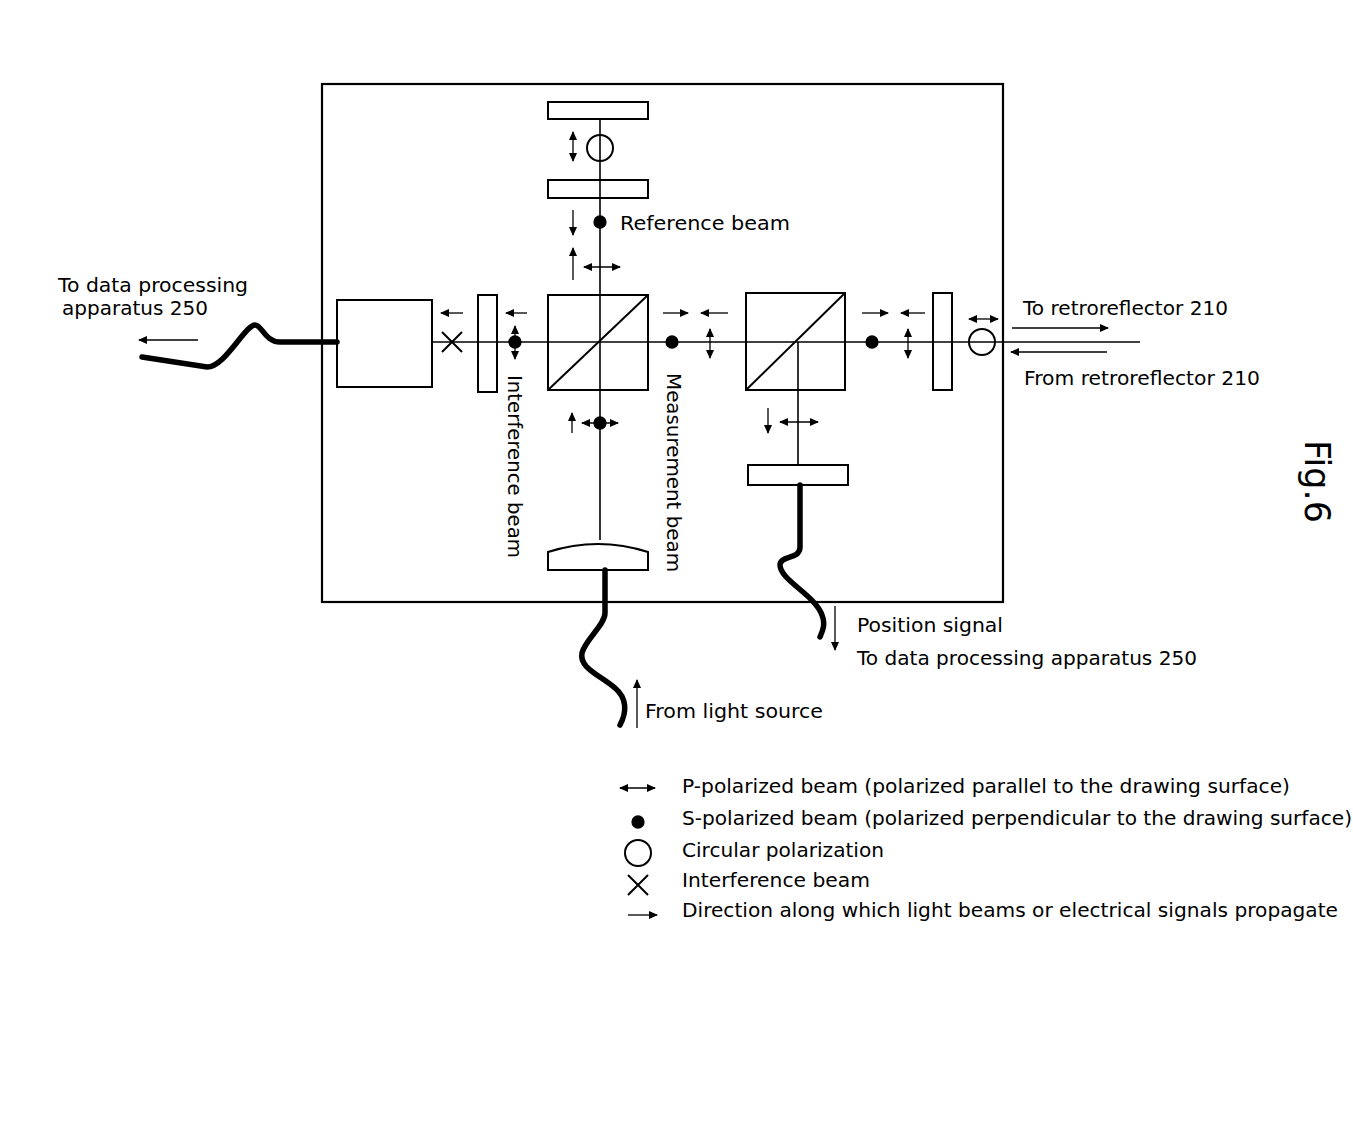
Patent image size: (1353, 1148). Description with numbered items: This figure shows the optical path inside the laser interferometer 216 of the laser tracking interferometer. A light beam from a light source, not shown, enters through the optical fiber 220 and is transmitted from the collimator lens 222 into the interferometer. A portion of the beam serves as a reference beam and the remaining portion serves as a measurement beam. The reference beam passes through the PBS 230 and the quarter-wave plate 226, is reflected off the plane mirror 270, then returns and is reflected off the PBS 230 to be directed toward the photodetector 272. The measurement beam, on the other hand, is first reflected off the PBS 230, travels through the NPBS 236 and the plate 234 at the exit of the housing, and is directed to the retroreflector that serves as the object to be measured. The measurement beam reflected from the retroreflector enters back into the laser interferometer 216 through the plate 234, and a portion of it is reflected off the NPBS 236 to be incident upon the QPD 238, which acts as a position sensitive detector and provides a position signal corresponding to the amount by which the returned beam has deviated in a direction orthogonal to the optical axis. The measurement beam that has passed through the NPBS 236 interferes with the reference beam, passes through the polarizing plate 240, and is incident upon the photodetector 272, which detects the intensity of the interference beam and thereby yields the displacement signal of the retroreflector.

The laser interferometer 216 is at (1003, 556).
The optical fiber 220 is at (598, 665).
The collimator lens 222 is at (619, 550).
The λ/4 plate 226 is at (648, 189).
The PBS 230 is at (648, 295).
The quarter-wave plate 234 is at (933, 381).
The NPBS 236 is at (798, 293).
The QPD 238 is at (838, 487).
The polarizing plate 240 is at (478, 297).
The plane mirror 270 is at (648, 111).
The photodetector 272 is at (364, 300).